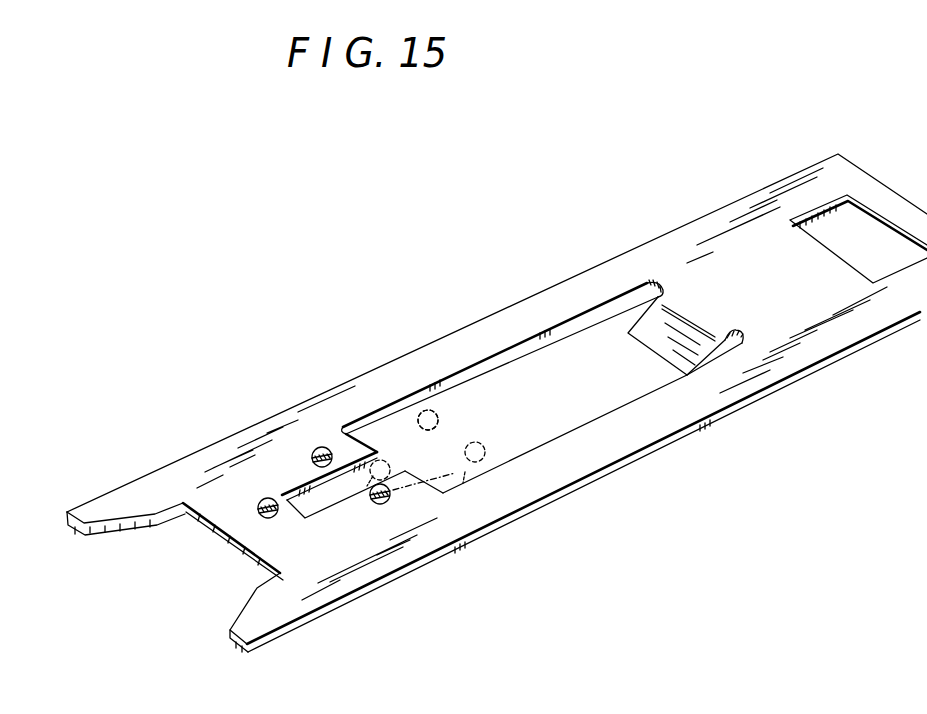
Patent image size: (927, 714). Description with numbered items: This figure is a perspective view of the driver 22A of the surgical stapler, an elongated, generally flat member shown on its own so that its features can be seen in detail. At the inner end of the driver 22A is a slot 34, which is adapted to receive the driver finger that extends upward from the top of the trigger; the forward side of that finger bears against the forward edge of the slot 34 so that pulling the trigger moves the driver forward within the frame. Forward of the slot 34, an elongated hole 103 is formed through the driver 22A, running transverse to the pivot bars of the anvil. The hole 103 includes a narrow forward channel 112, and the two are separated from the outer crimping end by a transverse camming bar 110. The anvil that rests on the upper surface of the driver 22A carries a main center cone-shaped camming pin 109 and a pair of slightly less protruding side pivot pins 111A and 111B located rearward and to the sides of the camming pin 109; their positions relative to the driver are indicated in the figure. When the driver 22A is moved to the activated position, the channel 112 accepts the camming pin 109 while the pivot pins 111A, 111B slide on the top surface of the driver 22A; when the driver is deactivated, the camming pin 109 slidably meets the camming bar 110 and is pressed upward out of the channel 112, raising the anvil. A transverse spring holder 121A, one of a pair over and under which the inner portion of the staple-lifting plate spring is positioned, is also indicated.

The driver 22A is at (531, 296).
The slot 34 is at (862, 228).
The elongated hole 103 is at (560, 394).
The camming pin 109 is at (266, 500).
The camming bar 110 is at (262, 538).
The side pivot pin 111A is at (330, 441).
The side pivot pin 111B is at (470, 462).
The channel 112 is at (318, 507).
The transverse spring holder 121A is at (428, 410).